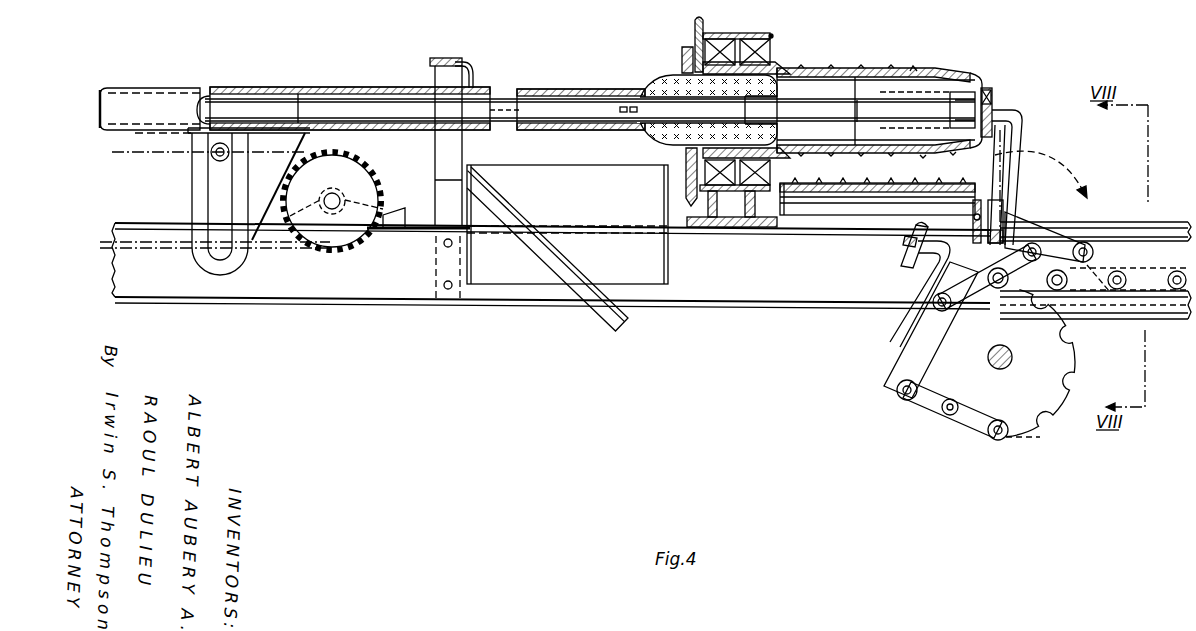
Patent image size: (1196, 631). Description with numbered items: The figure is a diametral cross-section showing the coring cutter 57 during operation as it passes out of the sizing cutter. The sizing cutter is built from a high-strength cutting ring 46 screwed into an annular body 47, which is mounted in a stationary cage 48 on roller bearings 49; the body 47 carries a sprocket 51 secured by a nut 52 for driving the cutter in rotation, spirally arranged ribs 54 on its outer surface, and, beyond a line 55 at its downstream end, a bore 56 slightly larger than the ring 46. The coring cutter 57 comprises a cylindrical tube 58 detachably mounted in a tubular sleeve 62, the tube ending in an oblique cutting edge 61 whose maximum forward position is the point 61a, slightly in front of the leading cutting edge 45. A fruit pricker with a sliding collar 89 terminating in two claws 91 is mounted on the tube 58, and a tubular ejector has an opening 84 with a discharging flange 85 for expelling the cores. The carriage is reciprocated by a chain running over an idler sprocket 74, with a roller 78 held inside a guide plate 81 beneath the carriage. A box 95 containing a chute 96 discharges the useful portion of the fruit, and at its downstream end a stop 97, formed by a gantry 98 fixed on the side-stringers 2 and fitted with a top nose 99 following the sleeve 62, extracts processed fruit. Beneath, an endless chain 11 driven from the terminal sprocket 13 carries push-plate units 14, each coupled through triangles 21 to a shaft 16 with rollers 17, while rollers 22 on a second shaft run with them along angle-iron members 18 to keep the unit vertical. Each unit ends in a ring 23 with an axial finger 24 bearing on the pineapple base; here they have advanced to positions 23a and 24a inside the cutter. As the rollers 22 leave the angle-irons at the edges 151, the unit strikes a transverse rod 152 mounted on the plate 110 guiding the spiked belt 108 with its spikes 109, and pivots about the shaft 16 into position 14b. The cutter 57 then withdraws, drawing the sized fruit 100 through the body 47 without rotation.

The side-stringers 2 is at (785, 288).
The endless chain 11 is at (1148, 282).
The terminal sprocket 13 is at (1052, 359).
The push-plate unit 14 is at (1008, 172).
The pivoted position of push-plate unit 14b is at (908, 313).
The shaft 16 is at (1005, 285).
The rollers 17 is at (1036, 248).
The angle-iron members 18 is at (1137, 262).
The triangles 21 is at (1027, 280).
The rollers 22 is at (1088, 246).
The ring 23 is at (993, 93).
The advanced position of ring 23a is at (927, 110).
The finger 24 is at (1023, 117).
The advanced position of finger 24a is at (927, 121).
The leading cutting edge 45 is at (990, 86).
The cutting ring 46 is at (958, 77).
The annular body 47 is at (856, 70).
The stationary cage 48 is at (773, 36).
The roller bearings 49 is at (764, 51).
The sprocket 51 is at (704, 26).
The nut 52 is at (682, 60).
The spirally arranged ribs 54 is at (913, 71).
The line 55 is at (856, 114).
The bore 56 is at (818, 130).
The coring cutter 57 is at (505, 88).
The cylindrical tube 58 is at (499, 117).
The oblique cutting edge 61 is at (773, 120).
The end-of-travel position of cutting edge 61a is at (995, 107).
The tubular sleeve 62 is at (312, 91).
The idler sprocket 74 is at (334, 236).
The roller 78 is at (212, 155).
The guide plate 81 is at (196, 207).
The opening 84 is at (114, 88).
The discharging flange 85 is at (113, 130).
The sliding collar 89 is at (532, 97).
The claws 91 is at (641, 127).
The box 95 is at (568, 179).
The chute 96 is at (568, 283).
The stop 97 is at (450, 58).
The gantry 98 is at (447, 157).
The top nose 99 is at (474, 76).
The sized fruit 100 is at (652, 93).
The rubberized belt 108 is at (836, 198).
The spikes 109 is at (902, 186).
The plate 110 is at (860, 196).
The edges 151 is at (1080, 272).
The transverse rod 152 is at (978, 200).